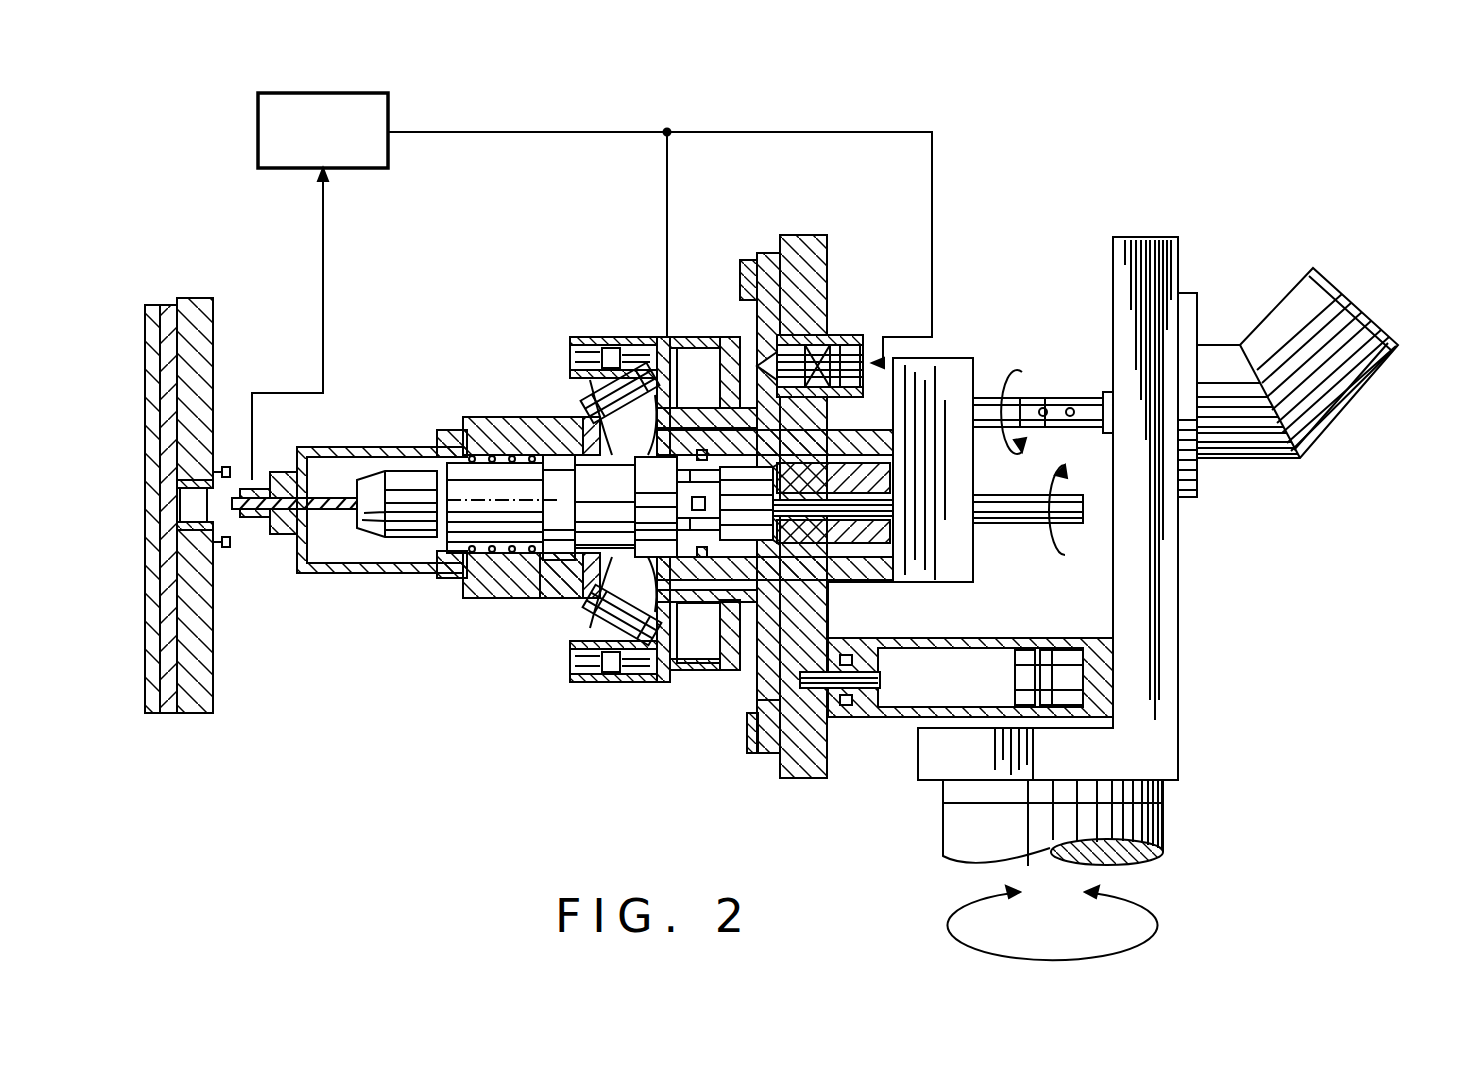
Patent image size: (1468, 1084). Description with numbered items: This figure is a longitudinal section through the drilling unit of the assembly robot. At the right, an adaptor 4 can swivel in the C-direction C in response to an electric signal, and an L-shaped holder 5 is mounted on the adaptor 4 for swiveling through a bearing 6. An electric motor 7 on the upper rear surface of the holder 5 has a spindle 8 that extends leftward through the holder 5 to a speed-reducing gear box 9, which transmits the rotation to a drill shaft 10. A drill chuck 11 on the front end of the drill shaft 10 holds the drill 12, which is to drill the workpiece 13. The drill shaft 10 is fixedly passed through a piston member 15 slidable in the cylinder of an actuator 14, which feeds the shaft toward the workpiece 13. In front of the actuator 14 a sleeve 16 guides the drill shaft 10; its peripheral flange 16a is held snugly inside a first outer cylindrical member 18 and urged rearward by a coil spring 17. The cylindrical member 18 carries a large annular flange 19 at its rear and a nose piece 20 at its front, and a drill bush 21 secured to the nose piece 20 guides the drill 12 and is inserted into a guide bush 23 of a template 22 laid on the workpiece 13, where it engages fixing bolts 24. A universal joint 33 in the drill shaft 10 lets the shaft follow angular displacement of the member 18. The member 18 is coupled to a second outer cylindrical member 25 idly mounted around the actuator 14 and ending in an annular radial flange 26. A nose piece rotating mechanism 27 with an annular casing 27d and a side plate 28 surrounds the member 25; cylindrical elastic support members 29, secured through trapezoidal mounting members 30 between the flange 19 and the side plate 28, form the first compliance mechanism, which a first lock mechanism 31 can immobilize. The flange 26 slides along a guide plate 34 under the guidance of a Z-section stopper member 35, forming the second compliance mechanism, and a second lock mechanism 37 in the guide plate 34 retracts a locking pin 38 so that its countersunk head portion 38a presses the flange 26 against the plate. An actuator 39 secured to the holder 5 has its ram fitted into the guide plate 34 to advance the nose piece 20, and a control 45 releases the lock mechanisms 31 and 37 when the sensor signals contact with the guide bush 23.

The adaptor 4 is at (1170, 830).
The L-shaped holder 5 is at (1178, 712).
The bearing 6 is at (1165, 790).
The electric motor 7 is at (1322, 398).
The spindle 8 is at (1050, 398).
The gear box 9 is at (958, 358).
The drill shaft 10 is at (1022, 523).
The drill chuck 11 is at (408, 537).
The drill 12 is at (318, 510).
The workpiece 13 is at (150, 310).
The actuator 14 is at (852, 582).
The piston member 15 is at (905, 540).
The sleeve 16 is at (460, 560).
The peripheral flange 16a is at (548, 598).
The coil spring 17 is at (452, 430).
The first outer cylindrical member 18 is at (500, 417).
The annular flange 19 is at (585, 400).
The nose piece 20 is at (380, 447).
The drill bush 21 is at (270, 488).
The template 22 is at (214, 348).
The guide bush 23 is at (208, 535).
The fixing bolts 24 is at (228, 465).
The second outer cylindrical member 25 is at (728, 400).
The annular radial flange 26 is at (766, 262).
The nose piece rotating mechanism 27 is at (722, 340).
The annular casing 27d is at (757, 725).
The side plate 28 is at (692, 340).
The elastic support members 29 is at (600, 405).
The mounting members 30 is at (592, 440).
The first lock mechanism 31 is at (615, 337).
The universal joint 33 is at (712, 497).
The guide plate 34 is at (827, 250).
The annular stopper member 35 is at (748, 260).
The second lock mechanism 37 is at (862, 358).
The locking pin 38 is at (820, 345).
The countersunk head portion 38a is at (760, 360).
The actuator 39 is at (886, 717).
The control 45 is at (258, 100).
The C-direction C is at (1052, 916).